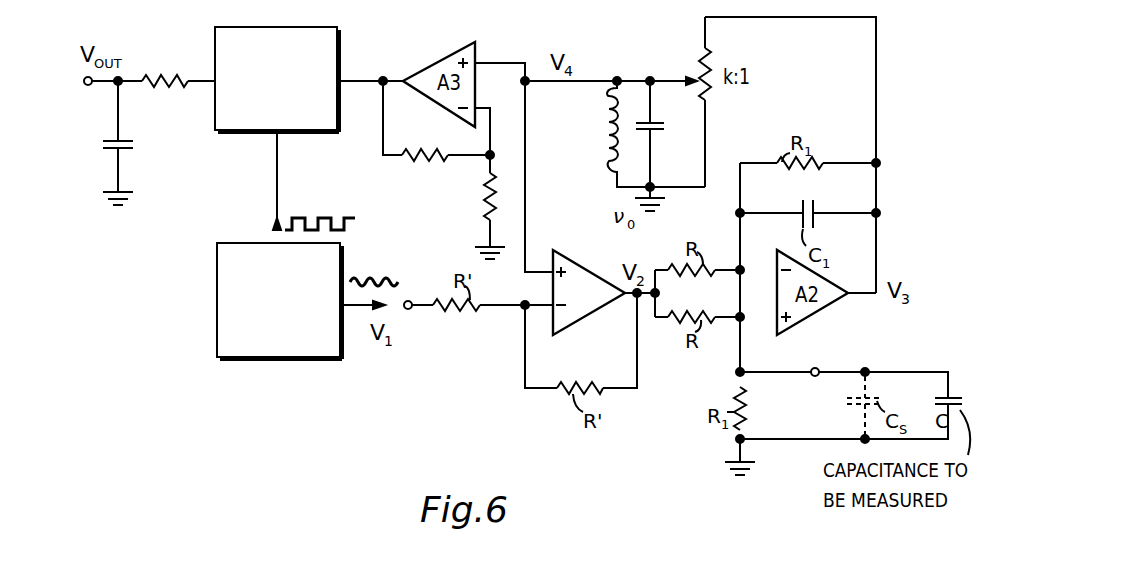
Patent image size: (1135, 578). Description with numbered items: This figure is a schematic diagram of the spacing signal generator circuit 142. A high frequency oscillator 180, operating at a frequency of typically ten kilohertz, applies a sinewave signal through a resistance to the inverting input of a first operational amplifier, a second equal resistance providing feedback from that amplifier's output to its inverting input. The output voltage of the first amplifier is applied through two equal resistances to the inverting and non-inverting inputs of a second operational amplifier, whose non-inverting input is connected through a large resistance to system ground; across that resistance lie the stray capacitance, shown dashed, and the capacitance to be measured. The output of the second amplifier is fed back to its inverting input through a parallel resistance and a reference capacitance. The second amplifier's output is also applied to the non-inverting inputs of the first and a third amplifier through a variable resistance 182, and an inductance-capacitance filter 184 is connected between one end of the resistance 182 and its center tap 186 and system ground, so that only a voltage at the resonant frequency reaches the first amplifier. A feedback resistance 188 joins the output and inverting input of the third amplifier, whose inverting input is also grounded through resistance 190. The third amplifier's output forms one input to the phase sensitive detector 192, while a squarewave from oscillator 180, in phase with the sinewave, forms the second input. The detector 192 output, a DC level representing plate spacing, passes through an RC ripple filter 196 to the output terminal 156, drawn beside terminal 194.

The circuit 142 is at (450, 372).
The V_out terminal 156 is at (820, 368).
The high frequency oscillator 180 is at (217, 277).
The variable resistance 182 is at (700, 58).
The inductance-capacitance filter 184 is at (605, 98).
The center tap 186 is at (664, 78).
The feedback resistance 188 is at (436, 142).
The resistance 190 is at (472, 207).
The phase sensitive detector 192 is at (341, 42).
The output terminal 194 is at (87, 84).
The RC ripple filter 196 is at (120, 138).